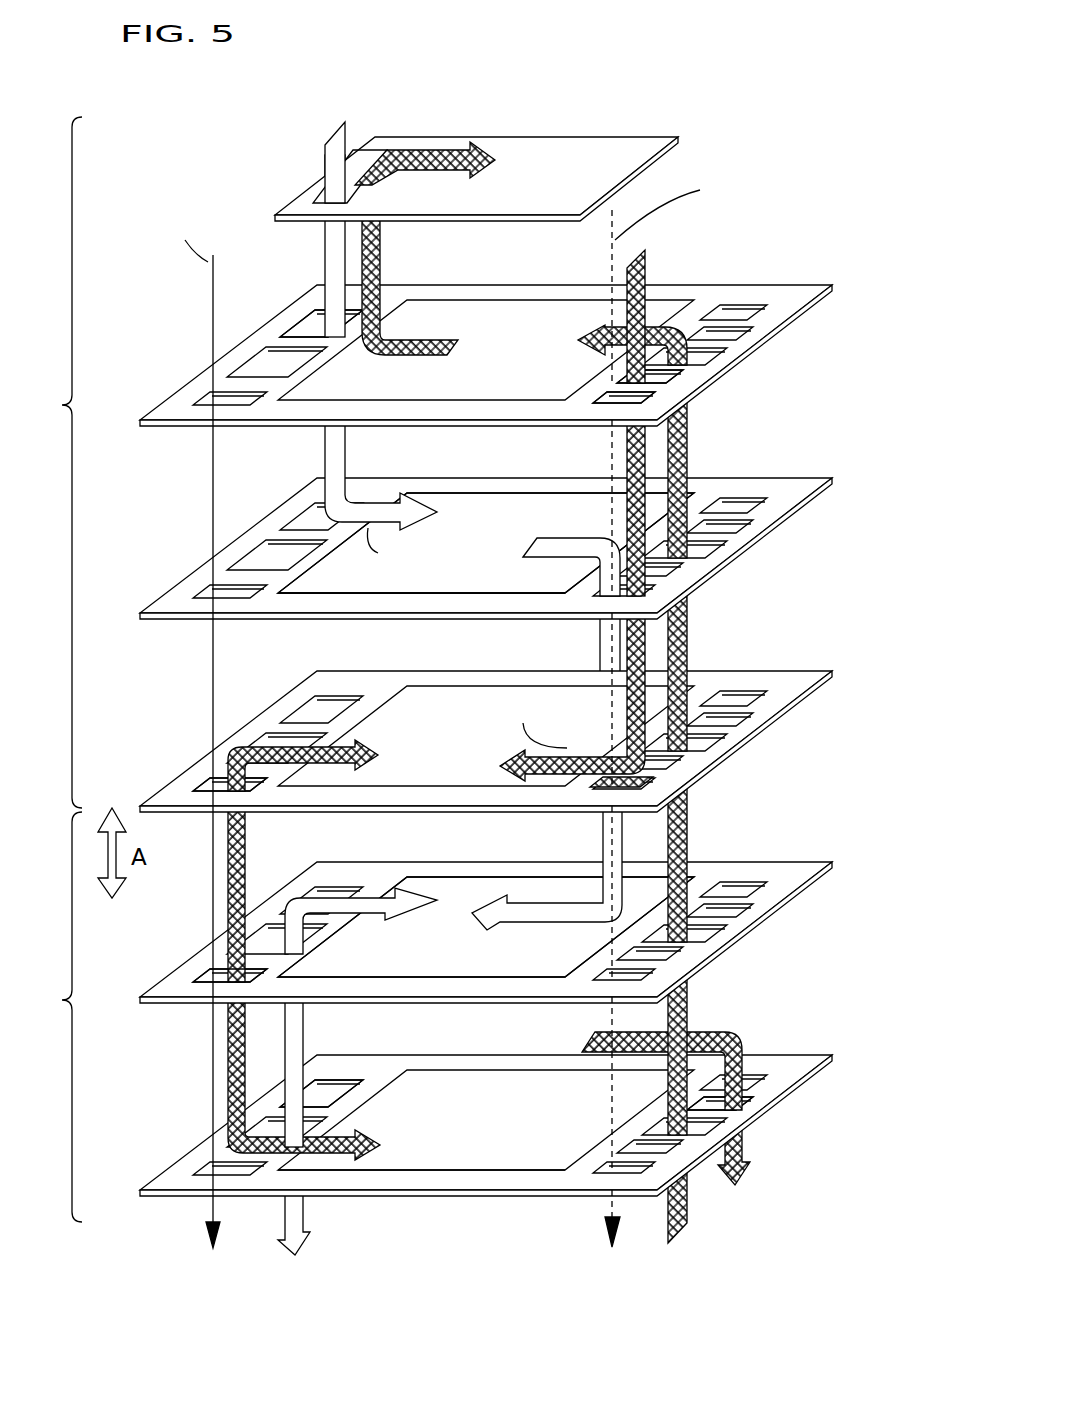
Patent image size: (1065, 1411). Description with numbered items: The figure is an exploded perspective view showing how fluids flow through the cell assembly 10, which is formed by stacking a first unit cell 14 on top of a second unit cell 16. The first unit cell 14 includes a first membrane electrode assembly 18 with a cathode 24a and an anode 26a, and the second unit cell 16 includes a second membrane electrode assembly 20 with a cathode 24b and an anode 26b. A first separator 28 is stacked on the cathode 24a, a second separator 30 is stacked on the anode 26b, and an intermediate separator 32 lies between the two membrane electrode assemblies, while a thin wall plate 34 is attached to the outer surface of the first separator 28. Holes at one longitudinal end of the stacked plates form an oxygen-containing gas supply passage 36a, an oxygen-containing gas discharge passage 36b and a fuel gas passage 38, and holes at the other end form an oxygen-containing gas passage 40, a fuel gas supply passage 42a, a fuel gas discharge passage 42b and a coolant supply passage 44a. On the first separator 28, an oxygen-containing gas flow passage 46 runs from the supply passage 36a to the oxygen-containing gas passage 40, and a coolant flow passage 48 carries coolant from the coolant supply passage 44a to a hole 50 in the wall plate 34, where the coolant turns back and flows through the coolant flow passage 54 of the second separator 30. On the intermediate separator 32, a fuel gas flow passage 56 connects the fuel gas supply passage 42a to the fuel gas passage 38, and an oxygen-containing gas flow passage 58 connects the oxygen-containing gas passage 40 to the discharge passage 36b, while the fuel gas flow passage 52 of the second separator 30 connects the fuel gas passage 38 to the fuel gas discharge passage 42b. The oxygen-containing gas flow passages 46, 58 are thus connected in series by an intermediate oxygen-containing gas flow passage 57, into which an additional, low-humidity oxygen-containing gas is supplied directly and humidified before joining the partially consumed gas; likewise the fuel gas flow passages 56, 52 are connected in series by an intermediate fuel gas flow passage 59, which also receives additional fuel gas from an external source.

The cell assembly 10 is at (812, 122).
The first unit cell 14 is at (52, 462).
The second unit cell 16 is at (52, 1017).
The first membrane electrode assembly 18 is at (773, 470).
The second membrane electrode assembly 20 is at (765, 850).
The cathode 24a is at (473, 500).
The cathode 24b is at (476, 897).
The anode 26a is at (323, 598).
The anode 26b is at (492, 1102).
The first separator 28 is at (742, 278).
The second separator 30 is at (768, 1042).
The intermediate separator 32 is at (773, 648).
The wall plate 34 is at (553, 132).
The oxygen-containing gas supply passage 36a is at (305, 328).
The oxygen-containing gas discharge passage 36b is at (335, 1088).
The fuel gas passage 38 is at (205, 786).
The oxygen-containing gas passage 40 is at (655, 795).
The fuel gas supply passage 42a is at (668, 380).
The fuel gas discharge passage 42b is at (752, 1086).
The coolant supply passage 44a is at (718, 350).
The oxygen-containing gas flow passage 46 is at (555, 548).
The coolant flow passage 48 is at (578, 343).
The hole 50 is at (386, 156).
The fuel gas flow passage 52 is at (392, 1133).
The coolant flow passage 54 is at (452, 150).
The fuel gas flow passage 56 is at (393, 750).
The intermediate oxygen-containing gas flow passage 57 is at (600, 652).
The oxygen-containing gas flow passage 58 is at (400, 903).
The intermediate fuel gas flow passage 59 is at (248, 836).